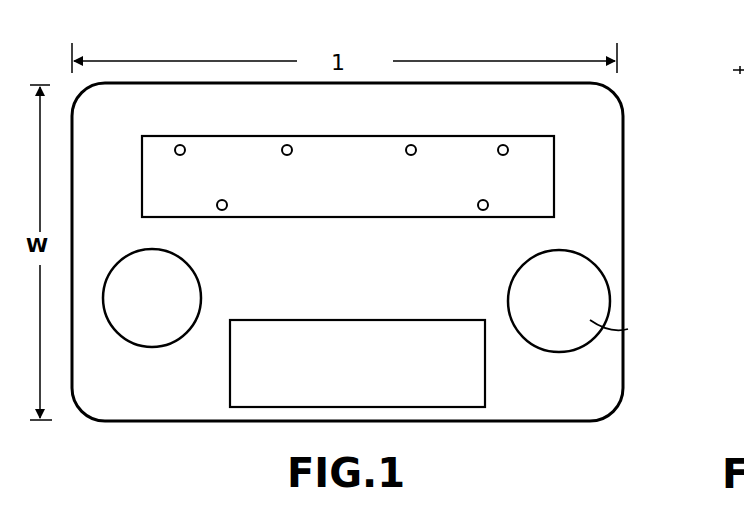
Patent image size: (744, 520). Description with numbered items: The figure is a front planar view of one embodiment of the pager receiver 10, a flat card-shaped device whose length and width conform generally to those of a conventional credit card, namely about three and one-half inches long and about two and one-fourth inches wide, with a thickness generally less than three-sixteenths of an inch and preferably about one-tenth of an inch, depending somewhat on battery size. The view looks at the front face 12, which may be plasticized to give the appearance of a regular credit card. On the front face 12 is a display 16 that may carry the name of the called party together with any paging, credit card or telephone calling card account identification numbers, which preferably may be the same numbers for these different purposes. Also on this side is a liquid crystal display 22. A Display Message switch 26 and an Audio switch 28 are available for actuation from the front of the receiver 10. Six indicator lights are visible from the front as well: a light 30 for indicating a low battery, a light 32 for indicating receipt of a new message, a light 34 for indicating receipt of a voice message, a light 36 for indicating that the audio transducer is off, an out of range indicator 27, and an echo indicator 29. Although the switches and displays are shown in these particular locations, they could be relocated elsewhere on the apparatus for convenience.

The planar pager receiver 10 is at (579, 117).
The front face 12 is at (181, 405).
The display 16 is at (460, 395).
The liquid crystal display 22 is at (470, 197).
The Display Message switch 26 is at (599, 261).
The out of range indicator 27 is at (201, 203).
The Audio switch 28 is at (119, 335).
The echo indicator 29 is at (499, 206).
The low battery light 30 is at (196, 152).
The new message light 32 is at (303, 152).
The voice message light 34 is at (427, 152).
The audio transducer off light 36 is at (519, 152).